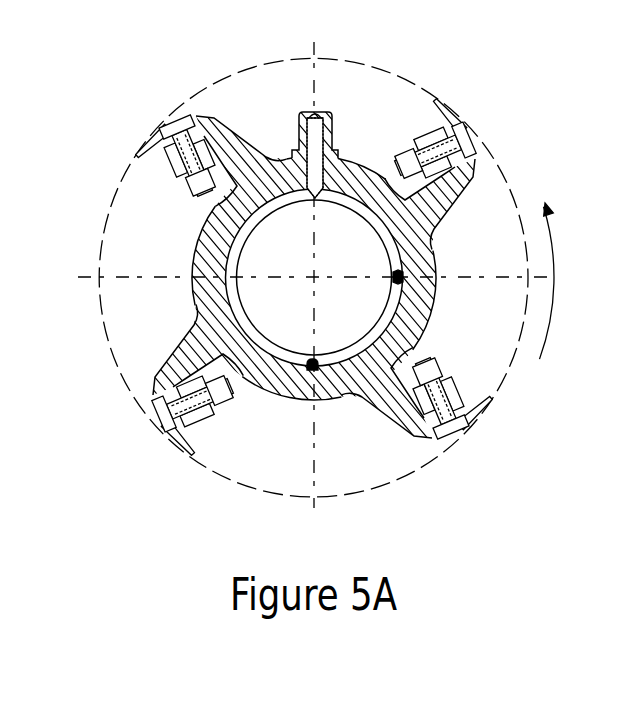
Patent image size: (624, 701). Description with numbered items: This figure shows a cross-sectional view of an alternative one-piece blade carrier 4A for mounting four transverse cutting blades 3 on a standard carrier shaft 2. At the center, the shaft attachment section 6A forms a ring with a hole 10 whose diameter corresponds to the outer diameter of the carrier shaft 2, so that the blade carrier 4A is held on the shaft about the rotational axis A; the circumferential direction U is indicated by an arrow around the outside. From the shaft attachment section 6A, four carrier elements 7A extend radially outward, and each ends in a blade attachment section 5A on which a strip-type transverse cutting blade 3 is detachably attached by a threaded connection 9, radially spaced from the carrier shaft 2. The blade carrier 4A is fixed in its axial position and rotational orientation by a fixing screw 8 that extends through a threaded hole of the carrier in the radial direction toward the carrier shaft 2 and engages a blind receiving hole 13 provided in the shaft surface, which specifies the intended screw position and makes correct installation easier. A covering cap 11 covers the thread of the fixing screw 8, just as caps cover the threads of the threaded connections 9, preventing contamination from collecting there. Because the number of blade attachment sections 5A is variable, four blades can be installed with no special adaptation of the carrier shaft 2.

The carrier shaft 2 is at (312, 350).
The transverse cutting blade 3 is at (143, 150).
The blade carrier 4A is at (427, 290).
The blade attachment section 5A is at (210, 128).
The shaft attachment section 6A is at (419, 259).
The carrier element 7A is at (228, 152).
The fixing screw 8 is at (336, 141).
The threaded connection 9 is at (188, 117).
The hole 10 is at (250, 218).
The covering cap 11 is at (333, 121).
The receiving hole 13 is at (316, 200).
The rotational axis A is at (307, 283).
The circumferential direction U is at (553, 297).